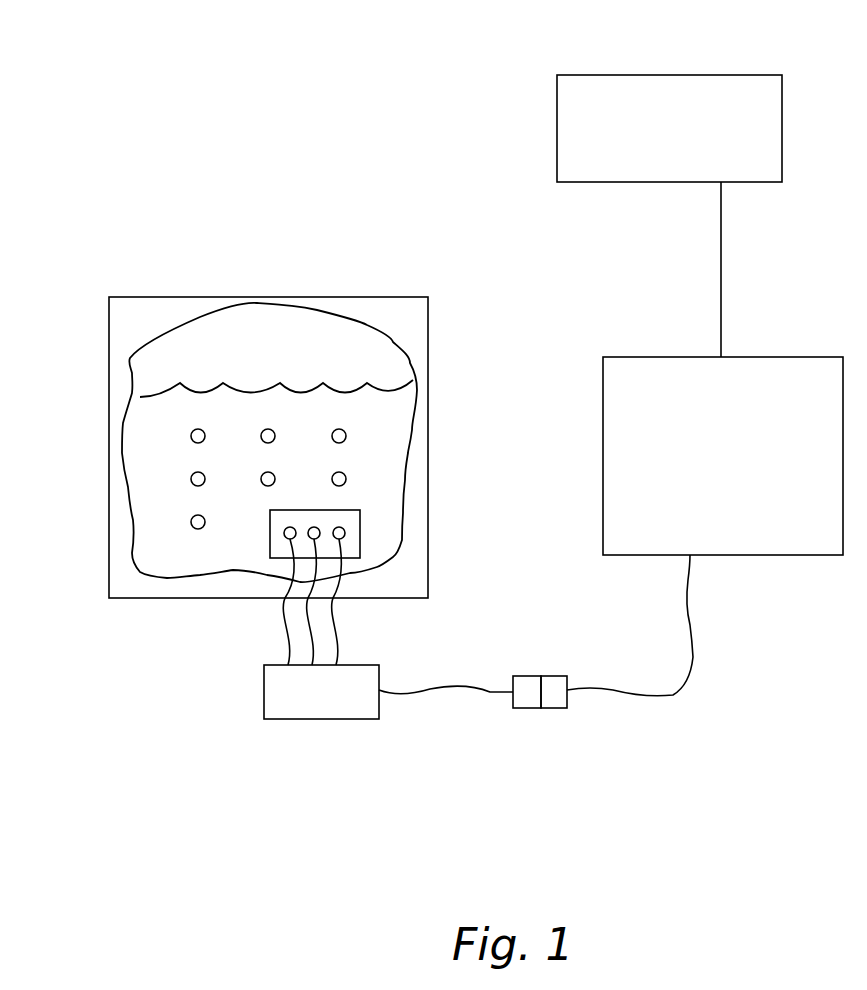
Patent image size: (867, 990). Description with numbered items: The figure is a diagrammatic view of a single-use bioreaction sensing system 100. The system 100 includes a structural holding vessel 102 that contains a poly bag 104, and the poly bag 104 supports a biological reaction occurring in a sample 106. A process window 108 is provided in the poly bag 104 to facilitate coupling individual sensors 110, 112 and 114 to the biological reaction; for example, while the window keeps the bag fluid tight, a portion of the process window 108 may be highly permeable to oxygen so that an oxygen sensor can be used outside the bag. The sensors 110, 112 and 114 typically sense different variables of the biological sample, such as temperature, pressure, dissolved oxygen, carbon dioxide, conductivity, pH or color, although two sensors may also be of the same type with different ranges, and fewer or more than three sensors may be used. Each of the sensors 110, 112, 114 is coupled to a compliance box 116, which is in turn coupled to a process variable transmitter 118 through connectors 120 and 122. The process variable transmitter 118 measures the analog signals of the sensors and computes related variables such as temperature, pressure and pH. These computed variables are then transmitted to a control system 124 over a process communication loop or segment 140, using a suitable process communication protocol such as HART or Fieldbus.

The bioreaction sensing system 100 is at (376, 184).
The structural holding vessel 102 is at (428, 355).
The poly bag 104 is at (128, 553).
The sample 106 is at (158, 452).
The process window 108 is at (363, 528).
The sensor 110 is at (284, 535).
The sensor 112 is at (320, 528).
The sensor 114 is at (345, 539).
The compliance box 116 is at (321, 724).
The process variable transmitter 118 is at (772, 555).
The connector 120 is at (522, 708).
The connector 122 is at (553, 708).
The control system 124 is at (653, 75).
The process communication loop or segment 140 is at (721, 232).